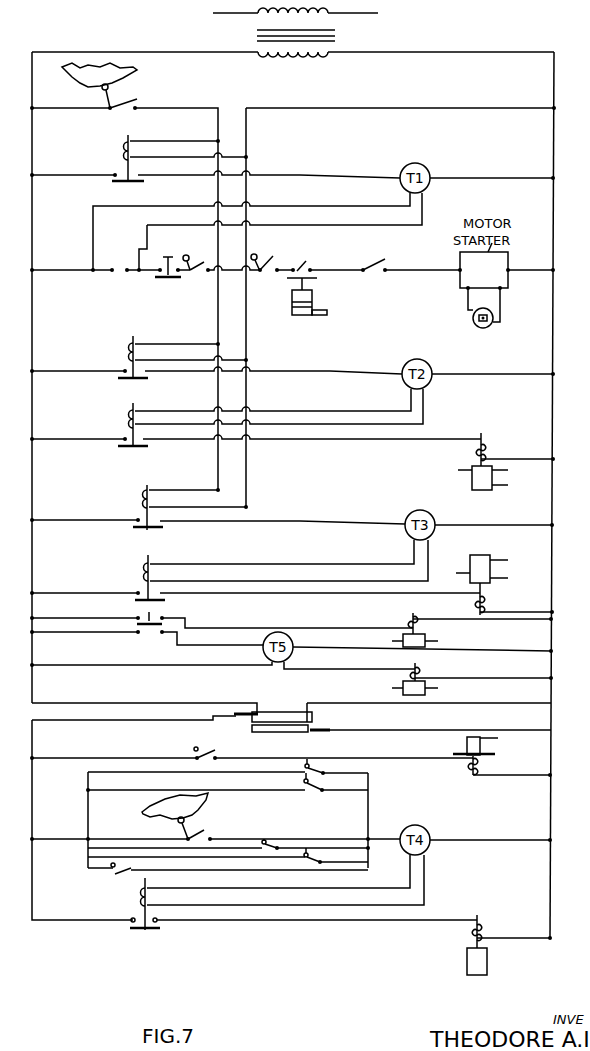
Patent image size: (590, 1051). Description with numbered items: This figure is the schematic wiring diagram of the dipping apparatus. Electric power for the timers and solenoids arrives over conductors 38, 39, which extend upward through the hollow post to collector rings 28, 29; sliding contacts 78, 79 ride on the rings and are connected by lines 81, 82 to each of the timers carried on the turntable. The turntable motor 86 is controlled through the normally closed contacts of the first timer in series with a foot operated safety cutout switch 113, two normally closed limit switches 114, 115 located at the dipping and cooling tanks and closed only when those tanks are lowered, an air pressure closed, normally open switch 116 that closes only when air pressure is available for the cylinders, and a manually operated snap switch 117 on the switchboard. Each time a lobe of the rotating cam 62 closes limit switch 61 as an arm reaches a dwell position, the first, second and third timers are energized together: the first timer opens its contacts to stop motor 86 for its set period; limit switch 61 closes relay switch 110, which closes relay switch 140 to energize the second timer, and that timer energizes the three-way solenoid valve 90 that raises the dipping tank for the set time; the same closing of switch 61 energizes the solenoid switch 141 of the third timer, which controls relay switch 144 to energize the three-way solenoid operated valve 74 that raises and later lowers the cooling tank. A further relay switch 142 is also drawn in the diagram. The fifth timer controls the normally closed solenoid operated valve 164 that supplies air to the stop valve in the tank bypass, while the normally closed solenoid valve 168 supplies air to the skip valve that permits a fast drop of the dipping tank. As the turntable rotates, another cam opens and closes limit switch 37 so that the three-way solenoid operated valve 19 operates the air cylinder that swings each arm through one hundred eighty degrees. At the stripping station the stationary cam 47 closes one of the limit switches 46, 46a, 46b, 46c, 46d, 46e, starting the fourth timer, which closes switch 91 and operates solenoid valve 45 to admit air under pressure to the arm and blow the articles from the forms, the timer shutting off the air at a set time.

The cam 62 is at (72, 78).
The limit switch 61 is at (125, 98).
The relay switch 110 is at (121, 170).
The foot operated safety cutout switch 113 is at (168, 258).
The limit switch 114 is at (203, 273).
The limit switch 115 is at (262, 263).
The air pressure closed, normally open switch 116 is at (308, 264).
The manually operated switch 117 is at (376, 263).
The motor 86 is at (490, 326).
The relay switch 140 is at (123, 362).
The relay 142 is at (124, 426).
The solenoid switch 141 is at (138, 516).
The relay switch 144 is at (138, 591).
The three-way solenoid valve 90 is at (485, 490).
The three-way solenoid operated valve 74 is at (485, 557).
The normally closed solenoid valve 168 is at (420, 640).
The normally closed solenoid operated valve 164 is at (425, 693).
The conductor 38 is at (223, 703).
The sliding contact 78 is at (244, 717).
The line 81 is at (137, 724).
The collector ring 28 is at (283, 712).
The collector ring 29 is at (295, 733).
The conductor 39 is at (340, 699).
The sliding contact 79 is at (328, 731).
The line 82 is at (414, 731).
The limit switch 37 is at (194, 749).
The three-way solenoid operated valve 19 is at (467, 742).
The stationary cam 47 is at (152, 815).
The timer limit switch 46 is at (203, 836).
The limit switch 46a is at (320, 760).
The limit switch 46b is at (312, 791).
The limit switch 46c is at (285, 832).
The switch 46d is at (315, 855).
The limit switch 46e is at (125, 870).
The switch 91 is at (152, 930).
The solenoid valve 45 is at (487, 965).